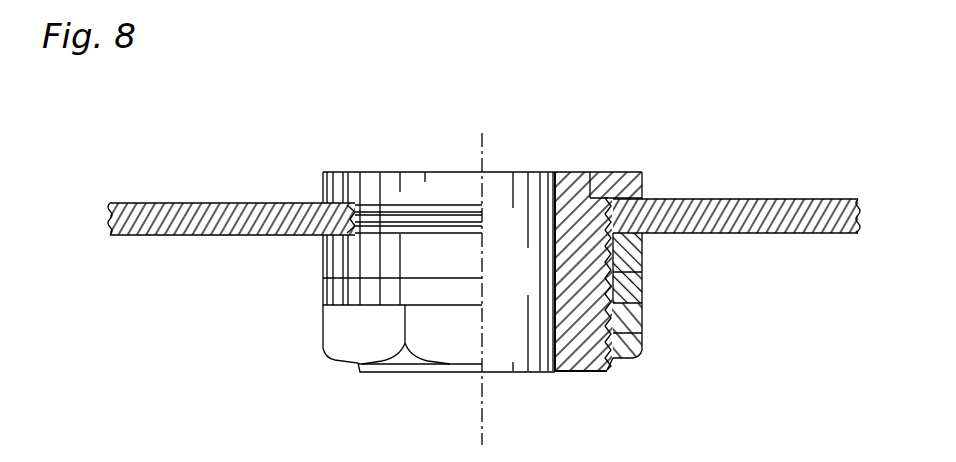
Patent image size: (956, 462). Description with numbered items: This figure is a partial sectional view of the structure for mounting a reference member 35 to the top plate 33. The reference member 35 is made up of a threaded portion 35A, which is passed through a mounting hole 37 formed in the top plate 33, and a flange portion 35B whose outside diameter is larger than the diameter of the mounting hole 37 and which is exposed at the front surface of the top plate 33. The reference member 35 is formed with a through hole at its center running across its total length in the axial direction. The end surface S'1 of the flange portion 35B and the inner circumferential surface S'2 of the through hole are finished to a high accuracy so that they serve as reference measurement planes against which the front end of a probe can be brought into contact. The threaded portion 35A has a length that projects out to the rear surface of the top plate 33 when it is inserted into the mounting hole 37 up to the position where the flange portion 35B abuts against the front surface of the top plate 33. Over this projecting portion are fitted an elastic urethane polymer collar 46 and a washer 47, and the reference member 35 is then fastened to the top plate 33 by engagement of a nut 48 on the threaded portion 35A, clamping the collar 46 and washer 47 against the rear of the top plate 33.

The top plate 33 is at (815, 200).
The reference member 35 is at (572, 161).
The threaded portion 35A is at (642, 333).
The flange portion 35B is at (645, 180).
The mounting hole 37 is at (603, 170).
The urethane polymer collar 46 is at (642, 257).
The washer 47 is at (642, 293).
The nut 48 is at (632, 358).
The end surface of the flange portion S'1 is at (439, 234).
The inner circumferential surface of the through hole S'2 is at (536, 234).